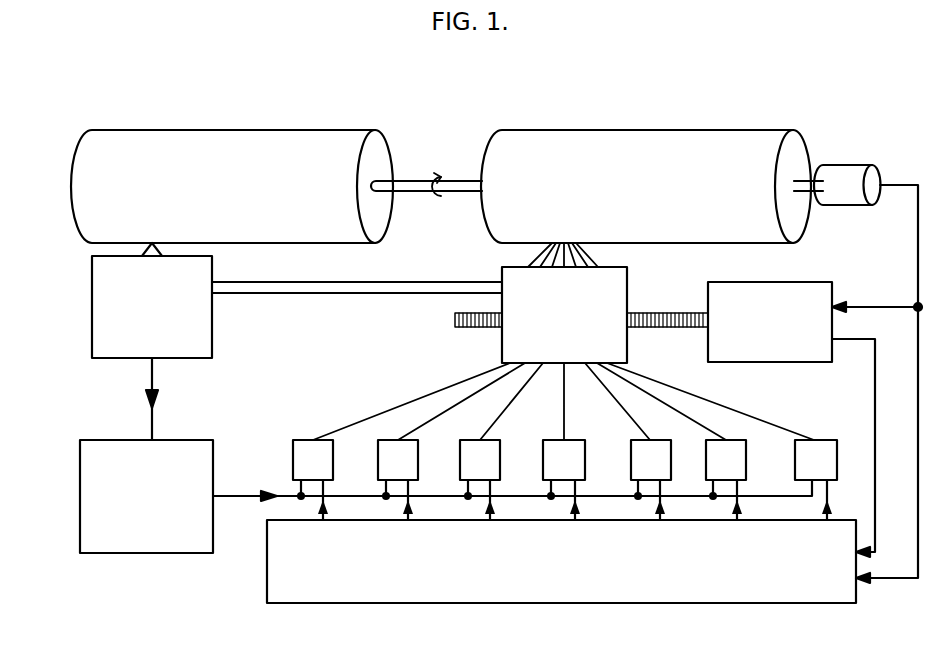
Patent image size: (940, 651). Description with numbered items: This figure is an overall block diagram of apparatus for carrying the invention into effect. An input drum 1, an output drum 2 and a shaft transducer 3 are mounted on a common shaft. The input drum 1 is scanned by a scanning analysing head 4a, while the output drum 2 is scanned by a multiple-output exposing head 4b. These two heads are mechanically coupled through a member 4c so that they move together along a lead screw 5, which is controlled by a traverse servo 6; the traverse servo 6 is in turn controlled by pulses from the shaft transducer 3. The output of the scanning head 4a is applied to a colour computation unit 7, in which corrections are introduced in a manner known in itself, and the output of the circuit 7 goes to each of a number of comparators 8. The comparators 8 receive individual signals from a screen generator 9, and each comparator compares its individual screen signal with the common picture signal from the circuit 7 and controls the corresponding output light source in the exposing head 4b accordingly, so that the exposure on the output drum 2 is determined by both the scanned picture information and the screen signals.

The input drum 1 is at (249, 130).
The output drum 2 is at (624, 130).
The shaft transducer 3 is at (850, 165).
The scanning analysing head 4a is at (92, 318).
The multiple-output exposing head 4b is at (500, 347).
The coupling member 4c is at (302, 292).
The lead screw 5 is at (666, 313).
The traverse servo 6 is at (830, 283).
The colour computation unit 7 is at (180, 439).
The comparators 8 is at (293, 446).
The screen generator 9 is at (267, 584).